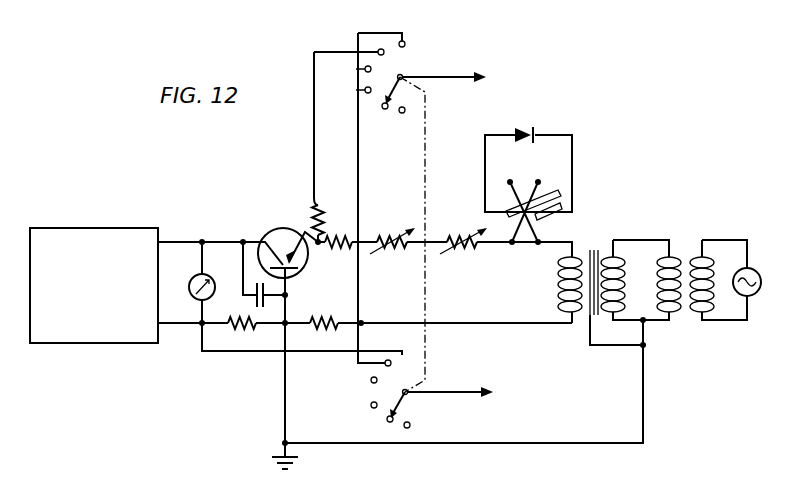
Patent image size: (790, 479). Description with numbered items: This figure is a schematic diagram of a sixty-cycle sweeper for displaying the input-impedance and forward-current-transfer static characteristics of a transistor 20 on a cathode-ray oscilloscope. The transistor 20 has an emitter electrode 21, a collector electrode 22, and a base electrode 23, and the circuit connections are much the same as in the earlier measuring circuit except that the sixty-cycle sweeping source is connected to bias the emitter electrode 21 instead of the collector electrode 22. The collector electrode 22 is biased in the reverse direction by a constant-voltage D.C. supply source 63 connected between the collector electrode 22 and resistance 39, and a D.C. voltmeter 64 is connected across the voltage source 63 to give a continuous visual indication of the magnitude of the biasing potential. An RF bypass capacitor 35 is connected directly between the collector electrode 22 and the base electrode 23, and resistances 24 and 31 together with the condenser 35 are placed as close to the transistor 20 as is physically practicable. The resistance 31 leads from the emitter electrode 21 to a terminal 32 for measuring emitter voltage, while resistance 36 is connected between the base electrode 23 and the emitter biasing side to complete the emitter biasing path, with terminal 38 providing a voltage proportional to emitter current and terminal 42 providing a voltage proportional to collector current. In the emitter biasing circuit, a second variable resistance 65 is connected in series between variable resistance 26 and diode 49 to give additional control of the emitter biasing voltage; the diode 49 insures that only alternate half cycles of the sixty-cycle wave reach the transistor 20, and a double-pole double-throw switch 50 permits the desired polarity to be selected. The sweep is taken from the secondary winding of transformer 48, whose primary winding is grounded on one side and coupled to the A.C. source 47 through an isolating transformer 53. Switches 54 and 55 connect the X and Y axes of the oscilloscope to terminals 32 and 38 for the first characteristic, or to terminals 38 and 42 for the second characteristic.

The constant-voltage supply source 63 is at (95, 237).
The D.-C. voltmeter 64 is at (198, 276).
The RF bypass capacitor 35 is at (258, 285).
The transistor 20 is at (283, 232).
The collector electrode 22 is at (268, 240).
The emitter electrode 21 is at (306, 262).
The base electrode 23 is at (300, 270).
The resistance 31 is at (310, 214).
The terminal 32 is at (313, 131).
The terminal 38 is at (359, 160).
The terminal 42 is at (376, 351).
The resistance 24 is at (341, 235).
The variable resistance 26 is at (391, 235).
The second variable resistance 65 is at (457, 235).
The switch 54 is at (402, 77).
The switch 55 is at (409, 395).
The diode 49 is at (525, 128).
The double-pole double-throw switch 50 is at (545, 190).
The transformer 48 is at (592, 250).
The isolating transformer 53 is at (686, 250).
The A.-C. source 47 is at (753, 296).
The resistance 36 is at (332, 316).
The resistance 39 is at (238, 334).